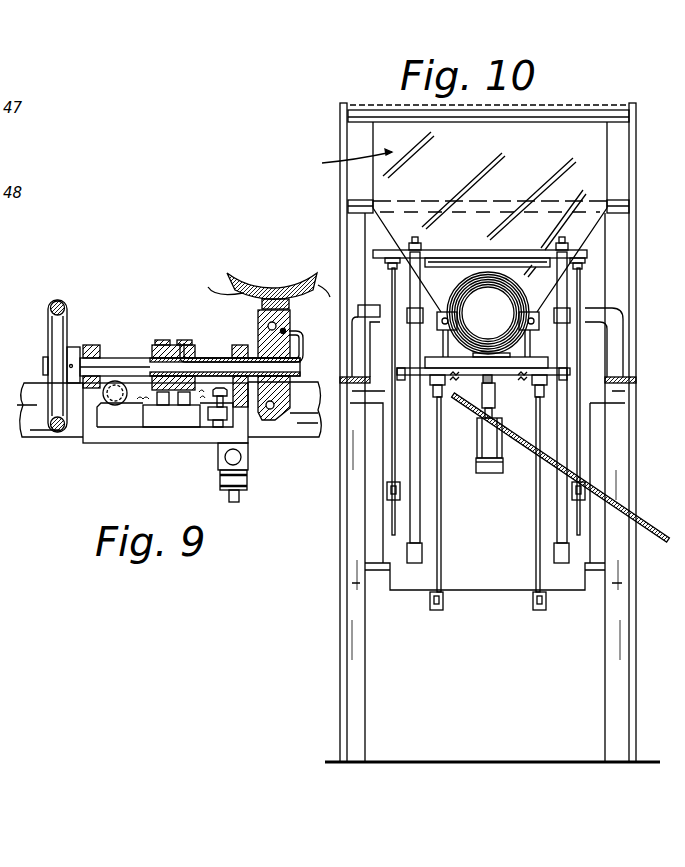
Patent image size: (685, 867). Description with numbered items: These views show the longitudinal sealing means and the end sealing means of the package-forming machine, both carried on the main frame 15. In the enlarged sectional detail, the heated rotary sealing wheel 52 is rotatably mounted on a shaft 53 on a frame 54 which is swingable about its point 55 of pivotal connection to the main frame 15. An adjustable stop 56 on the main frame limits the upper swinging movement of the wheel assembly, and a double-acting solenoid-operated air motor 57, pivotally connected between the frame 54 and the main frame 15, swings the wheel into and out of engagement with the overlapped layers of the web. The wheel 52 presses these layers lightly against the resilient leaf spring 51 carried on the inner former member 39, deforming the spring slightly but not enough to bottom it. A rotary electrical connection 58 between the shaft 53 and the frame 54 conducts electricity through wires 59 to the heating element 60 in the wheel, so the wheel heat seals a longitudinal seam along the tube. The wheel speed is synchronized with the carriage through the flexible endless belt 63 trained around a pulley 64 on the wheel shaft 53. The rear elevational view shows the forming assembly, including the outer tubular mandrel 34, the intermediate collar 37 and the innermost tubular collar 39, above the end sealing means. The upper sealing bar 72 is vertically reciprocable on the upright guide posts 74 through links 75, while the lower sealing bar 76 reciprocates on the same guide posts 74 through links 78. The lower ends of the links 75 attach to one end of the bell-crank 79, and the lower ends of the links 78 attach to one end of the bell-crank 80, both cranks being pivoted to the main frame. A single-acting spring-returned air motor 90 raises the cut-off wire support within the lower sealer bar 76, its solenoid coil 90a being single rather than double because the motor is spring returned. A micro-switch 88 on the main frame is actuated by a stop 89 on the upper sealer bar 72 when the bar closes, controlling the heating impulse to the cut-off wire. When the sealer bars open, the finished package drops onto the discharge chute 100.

In FIG. 9, the main frame 15 is at (34, 430).
In FIG. 10, the main frame 15 is at (356, 597).
In FIG. 10, the outer tubular mandrel 34 is at (462, 288).
In FIG. 10, the collar 37 is at (473, 280).
In FIG. 9, the tubular collar 39 is at (256, 282).
In FIG. 10, the tubular collar 39 is at (504, 279).
In FIG. 9, the resilient leaf spring 51 is at (278, 299).
In FIG. 9, the heated rotary sealing wheel 52 is at (258, 320).
In FIG. 9, the shaft 53 is at (113, 358).
In FIG. 9, the frame 54 is at (118, 432).
In FIG. 9, the point of pivotal connection 55 is at (110, 403).
In FIG. 9, the adjustable stop 56 is at (215, 425).
In FIG. 9, the double-acting solenoid-operated air motor 57 is at (241, 497).
In FIG. 9, the rotary electrical connection 58 is at (170, 340).
In FIG. 9, the wires 59 is at (302, 356).
In FIG. 9, the heating element 60 is at (290, 397).
In FIG. 9, the flexible endless belt 63 is at (58, 300).
In FIG. 9, the pulley 64 is at (68, 320).
In FIG. 10, the upper sealing bar 72 is at (527, 258).
In FIG. 10, the upright guide posts 74 is at (416, 528).
In FIG. 10, the links 75 is at (391, 462).
In FIG. 10, the lower sealing bar 76 is at (547, 365).
In FIG. 10, the links 78 is at (441, 500).
In FIG. 10, the bell-crank 79 is at (392, 500).
In FIG. 10, the bell-crank 80 is at (541, 610).
In FIG. 10, the micro-switch 88 is at (374, 305).
In FIG. 10, the stop 89 is at (385, 263).
In FIG. 10, the single-acting spring-returned air motor 90 is at (480, 438).
In FIG. 10, the solenoid coil of air motor 90 90a is at (489, 473).
In FIG. 10, the discharge chute 100 is at (612, 496).